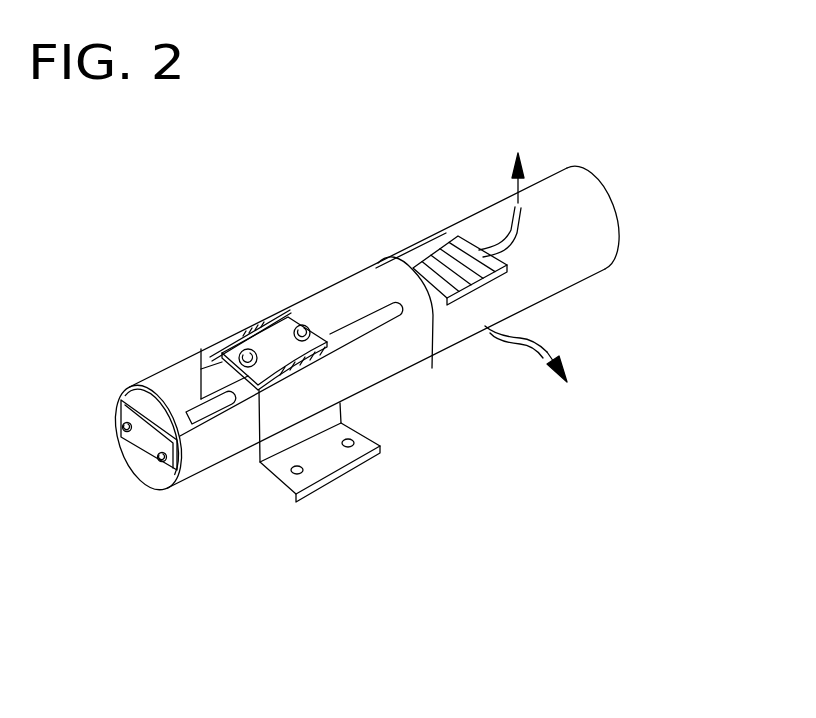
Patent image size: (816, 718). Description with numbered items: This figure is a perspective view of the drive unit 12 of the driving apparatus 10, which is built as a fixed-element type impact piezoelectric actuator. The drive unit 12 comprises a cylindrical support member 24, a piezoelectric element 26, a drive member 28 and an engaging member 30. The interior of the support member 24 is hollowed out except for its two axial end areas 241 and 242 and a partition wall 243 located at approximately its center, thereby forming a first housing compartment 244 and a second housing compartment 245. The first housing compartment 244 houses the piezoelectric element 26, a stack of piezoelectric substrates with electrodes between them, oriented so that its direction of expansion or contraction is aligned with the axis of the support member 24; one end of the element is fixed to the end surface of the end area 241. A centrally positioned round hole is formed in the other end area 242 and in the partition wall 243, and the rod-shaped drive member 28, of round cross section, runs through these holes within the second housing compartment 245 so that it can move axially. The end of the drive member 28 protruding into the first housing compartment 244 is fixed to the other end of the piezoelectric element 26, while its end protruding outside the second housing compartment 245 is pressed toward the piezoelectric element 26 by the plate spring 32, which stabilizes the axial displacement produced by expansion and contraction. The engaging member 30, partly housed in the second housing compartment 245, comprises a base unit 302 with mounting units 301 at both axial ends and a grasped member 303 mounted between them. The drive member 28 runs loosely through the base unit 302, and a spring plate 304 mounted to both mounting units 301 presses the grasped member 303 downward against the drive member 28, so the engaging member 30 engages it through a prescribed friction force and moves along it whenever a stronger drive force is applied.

The driving apparatus 10 is at (306, 153).
The drive unit 12 is at (247, 246).
The support member 24 is at (601, 203).
The end area 241 is at (587, 267).
The end area 242 is at (203, 457).
The partition wall 243 is at (432, 368).
The first housing compartment 244 is at (408, 257).
The second housing compartment 245 is at (170, 382).
The piezoelectric element 26 is at (452, 250).
The drive member 28 is at (355, 318).
The engaging member 30 is at (348, 447).
The mounting units 301 is at (215, 347).
The base unit 302 is at (275, 455).
The grasped member 303 is at (250, 323).
The spring plate 304 is at (329, 345).
The plate spring 32 is at (131, 443).